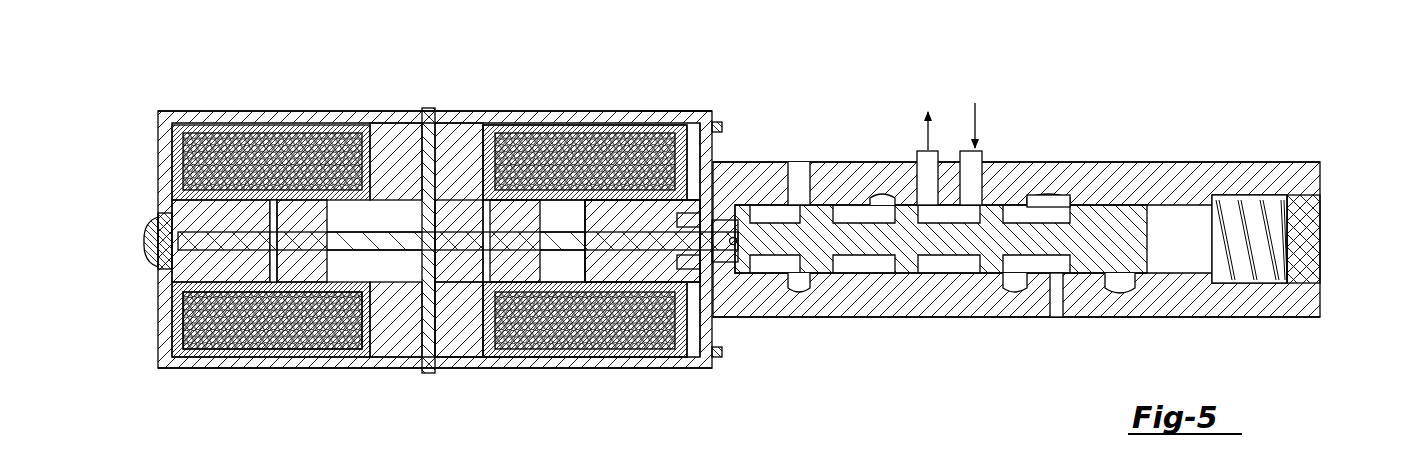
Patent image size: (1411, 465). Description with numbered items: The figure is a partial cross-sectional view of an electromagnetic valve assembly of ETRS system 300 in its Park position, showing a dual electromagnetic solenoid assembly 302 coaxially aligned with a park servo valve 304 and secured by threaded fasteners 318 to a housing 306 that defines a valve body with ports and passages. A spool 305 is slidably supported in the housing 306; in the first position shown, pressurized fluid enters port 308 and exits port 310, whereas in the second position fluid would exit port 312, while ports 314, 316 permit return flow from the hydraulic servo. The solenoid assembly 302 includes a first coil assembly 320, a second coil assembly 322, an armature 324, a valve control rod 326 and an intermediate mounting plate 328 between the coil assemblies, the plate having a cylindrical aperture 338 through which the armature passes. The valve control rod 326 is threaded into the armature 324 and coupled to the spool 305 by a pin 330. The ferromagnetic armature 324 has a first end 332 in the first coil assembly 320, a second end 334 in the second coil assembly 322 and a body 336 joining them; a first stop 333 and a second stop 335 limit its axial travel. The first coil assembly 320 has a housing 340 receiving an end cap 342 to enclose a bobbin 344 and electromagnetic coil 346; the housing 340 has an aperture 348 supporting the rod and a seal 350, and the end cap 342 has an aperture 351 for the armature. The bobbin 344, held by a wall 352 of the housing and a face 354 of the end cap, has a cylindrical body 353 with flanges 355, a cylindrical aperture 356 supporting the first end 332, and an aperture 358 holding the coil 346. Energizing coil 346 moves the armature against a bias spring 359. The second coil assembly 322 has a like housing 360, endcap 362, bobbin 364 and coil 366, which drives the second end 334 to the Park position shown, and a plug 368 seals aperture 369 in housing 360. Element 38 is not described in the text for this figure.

The ETRS system 300 is at (1347, 160).
The dual electromagnetic solenoid assembly 302 is at (245, 56).
The park servo valve 304 is at (926, 330).
The spool 305 is at (1095, 203).
The housing 306 is at (1245, 160).
The port 308 is at (965, 150).
The port 310 is at (922, 150).
The port 312 is at (1015, 192).
The port 314 is at (880, 320).
The port 316 is at (1053, 300).
The threaded fasteners 318 is at (724, 352).
The first coil assembly 320 is at (694, 108).
The second coil assembly 322 is at (200, 108).
The armature 324 is at (394, 230).
The valve control rod 326 is at (718, 264).
The intermediate mounting plate 328 is at (425, 106).
The pin 330 is at (740, 247).
The first end 332 is at (516, 256).
The first stop 333 is at (622, 242).
The second end 334 is at (302, 256).
The second stop 335 is at (170, 214).
The body 336 is at (397, 252).
The cylindrical aperture 338 is at (432, 203).
The housing 340 is at (655, 110).
The end cap 342 is at (468, 130).
The bobbin 344 is at (548, 197).
The electromagnetic coil 346 is at (545, 155).
The aperture 348 is at (612, 298).
The seal 350 is at (713, 205).
The aperture 351 is at (460, 358).
The wall 352 is at (640, 258).
The body 353 is at (600, 195).
The face 354 is at (468, 300).
The flanges 355 is at (468, 322).
The cylindrical aperture 356 is at (500, 270).
The aperture 358 is at (543, 335).
The bias spring 359 is at (1275, 236).
The housing 360 is at (190, 370).
The endcap 362 is at (378, 357).
The bobbin 364 is at (215, 292).
The electromagnetic coil 366 is at (290, 330).
The plug 368 is at (150, 258).
The aperture 369 is at (187, 238).
The end plug 38 is at (1320, 279).